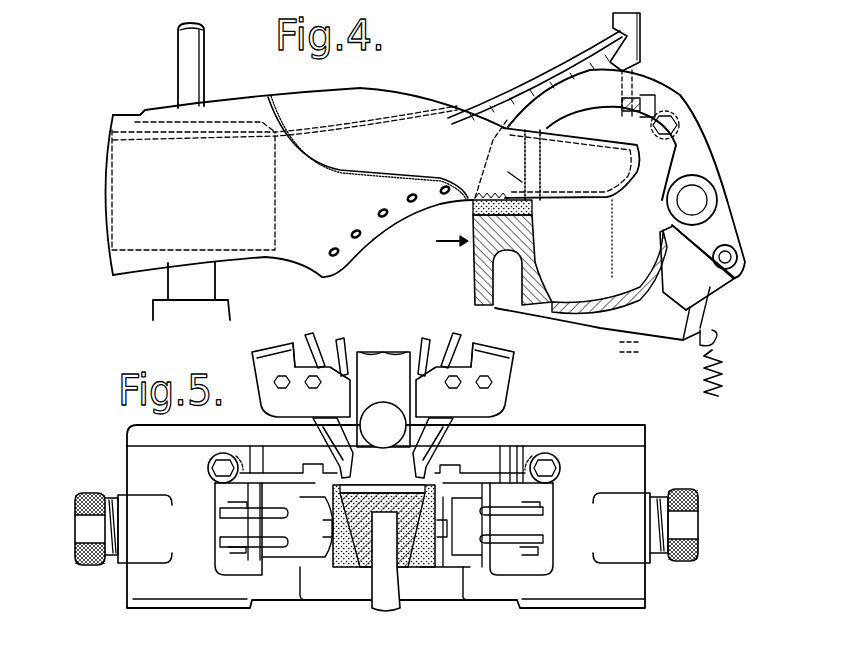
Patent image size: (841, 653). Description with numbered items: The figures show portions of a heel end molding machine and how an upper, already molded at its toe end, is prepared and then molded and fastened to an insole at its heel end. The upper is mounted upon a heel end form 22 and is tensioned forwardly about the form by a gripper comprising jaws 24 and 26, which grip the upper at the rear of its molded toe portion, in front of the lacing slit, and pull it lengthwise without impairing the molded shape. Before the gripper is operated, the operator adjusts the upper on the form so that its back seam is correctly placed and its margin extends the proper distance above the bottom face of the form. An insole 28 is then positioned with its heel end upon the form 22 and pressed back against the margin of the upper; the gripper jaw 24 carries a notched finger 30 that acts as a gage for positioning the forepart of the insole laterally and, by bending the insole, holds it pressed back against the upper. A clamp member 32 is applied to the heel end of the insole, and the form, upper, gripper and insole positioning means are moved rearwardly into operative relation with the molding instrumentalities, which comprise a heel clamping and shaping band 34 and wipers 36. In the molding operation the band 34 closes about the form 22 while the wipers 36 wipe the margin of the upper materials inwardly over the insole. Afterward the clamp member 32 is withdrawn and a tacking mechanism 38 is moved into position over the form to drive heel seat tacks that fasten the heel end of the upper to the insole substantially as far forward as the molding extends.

In FIG. 4, the heel end form 22 is at (133, 181).
In FIG. 4, the gripper jaw 24 is at (552, 202).
In FIG. 4, the gripper jaw 26 is at (522, 244).
In FIG. 4, the insole 28 is at (481, 94).
In FIG. 4, the notched finger 30 is at (641, 41).
In FIG. 4, the clamp member 32 is at (230, 122).
In FIG. 5, the heel clamping and shaping band 34 is at (424, 560).
In FIG. 5, the wipers 36 is at (415, 486).
In FIG. 5, the tacking mechanism 38 is at (430, 395).